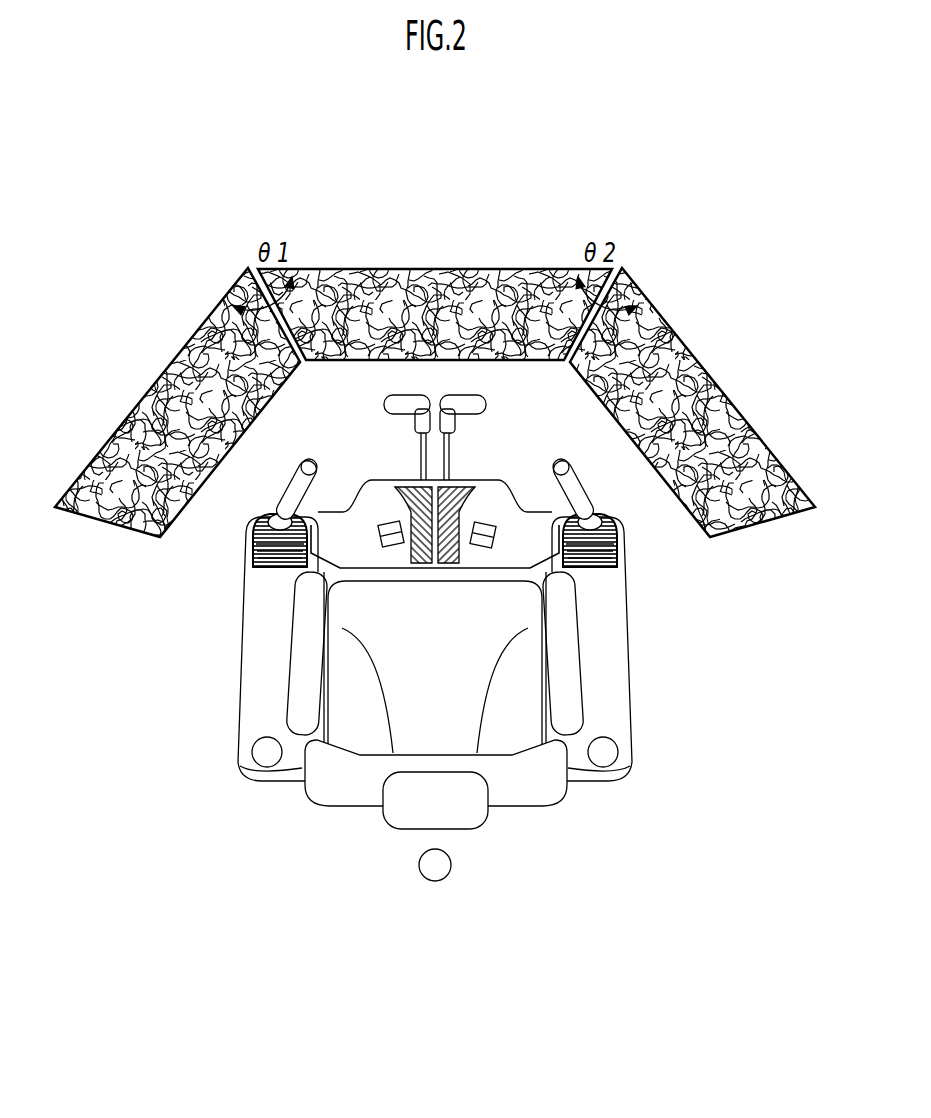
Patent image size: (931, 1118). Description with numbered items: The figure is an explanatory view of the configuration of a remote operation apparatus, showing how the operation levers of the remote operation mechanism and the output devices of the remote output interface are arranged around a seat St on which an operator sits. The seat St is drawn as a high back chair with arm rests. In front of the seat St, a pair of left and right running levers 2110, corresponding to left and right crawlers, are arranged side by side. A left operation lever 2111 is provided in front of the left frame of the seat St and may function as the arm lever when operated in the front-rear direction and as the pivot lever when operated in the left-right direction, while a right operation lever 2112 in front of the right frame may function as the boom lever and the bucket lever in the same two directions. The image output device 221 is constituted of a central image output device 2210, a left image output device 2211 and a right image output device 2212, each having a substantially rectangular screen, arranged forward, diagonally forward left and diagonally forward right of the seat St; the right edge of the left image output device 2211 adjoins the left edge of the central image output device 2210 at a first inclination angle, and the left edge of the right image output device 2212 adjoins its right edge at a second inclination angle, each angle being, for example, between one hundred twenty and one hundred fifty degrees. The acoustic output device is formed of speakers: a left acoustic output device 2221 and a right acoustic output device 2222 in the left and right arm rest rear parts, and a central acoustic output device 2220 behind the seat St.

The image output device 221 is at (435, 302).
The central image output device 2210 is at (427, 245).
The left image output device 2211 is at (154, 360).
The right image output device 2212 is at (716, 355).
The running levers 2110 is at (467, 374).
The left operation lever 2111 is at (307, 444).
The right operation lever 2112 is at (563, 444).
The seat St is at (534, 700).
The left acoustic output device 2221 is at (233, 755).
The right acoustic output device 2222 is at (640, 755).
The central acoustic output device 2220 is at (475, 868).